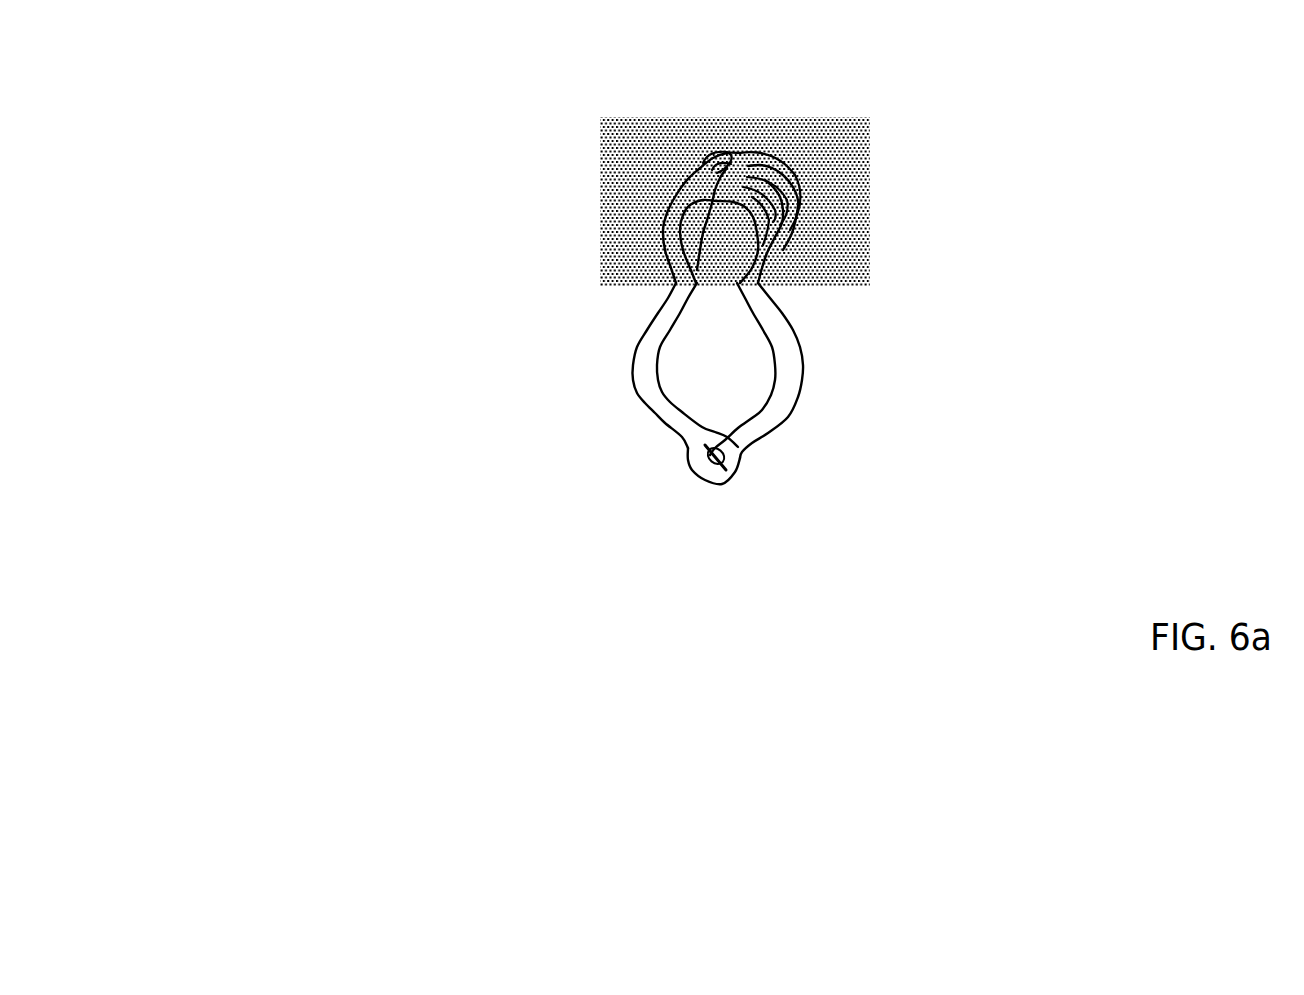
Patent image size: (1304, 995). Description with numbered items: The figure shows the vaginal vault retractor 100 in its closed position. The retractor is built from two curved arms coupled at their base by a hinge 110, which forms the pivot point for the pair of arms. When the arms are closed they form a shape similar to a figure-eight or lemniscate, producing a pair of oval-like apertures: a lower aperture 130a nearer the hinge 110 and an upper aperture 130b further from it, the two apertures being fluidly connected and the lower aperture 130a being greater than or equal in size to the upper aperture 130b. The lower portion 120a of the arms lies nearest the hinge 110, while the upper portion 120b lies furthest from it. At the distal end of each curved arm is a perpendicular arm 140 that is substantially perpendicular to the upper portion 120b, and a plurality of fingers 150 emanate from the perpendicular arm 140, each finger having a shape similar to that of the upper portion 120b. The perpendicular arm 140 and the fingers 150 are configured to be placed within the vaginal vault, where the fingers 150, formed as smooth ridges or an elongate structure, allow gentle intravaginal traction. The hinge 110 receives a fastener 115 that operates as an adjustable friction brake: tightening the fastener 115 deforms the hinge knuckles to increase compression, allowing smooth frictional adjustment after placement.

The vaginal vault retractor 100 is at (305, 133).
The hinge 110 is at (715, 472).
The fastener 115 is at (717, 457).
The lower portion 120a is at (787, 347).
The upper portion 120b is at (771, 264).
The lower aperture 130a is at (708, 368).
The upper aperture 130b is at (717, 245).
The perpendicular arm 140 is at (740, 167).
The fingers 150 is at (760, 182).